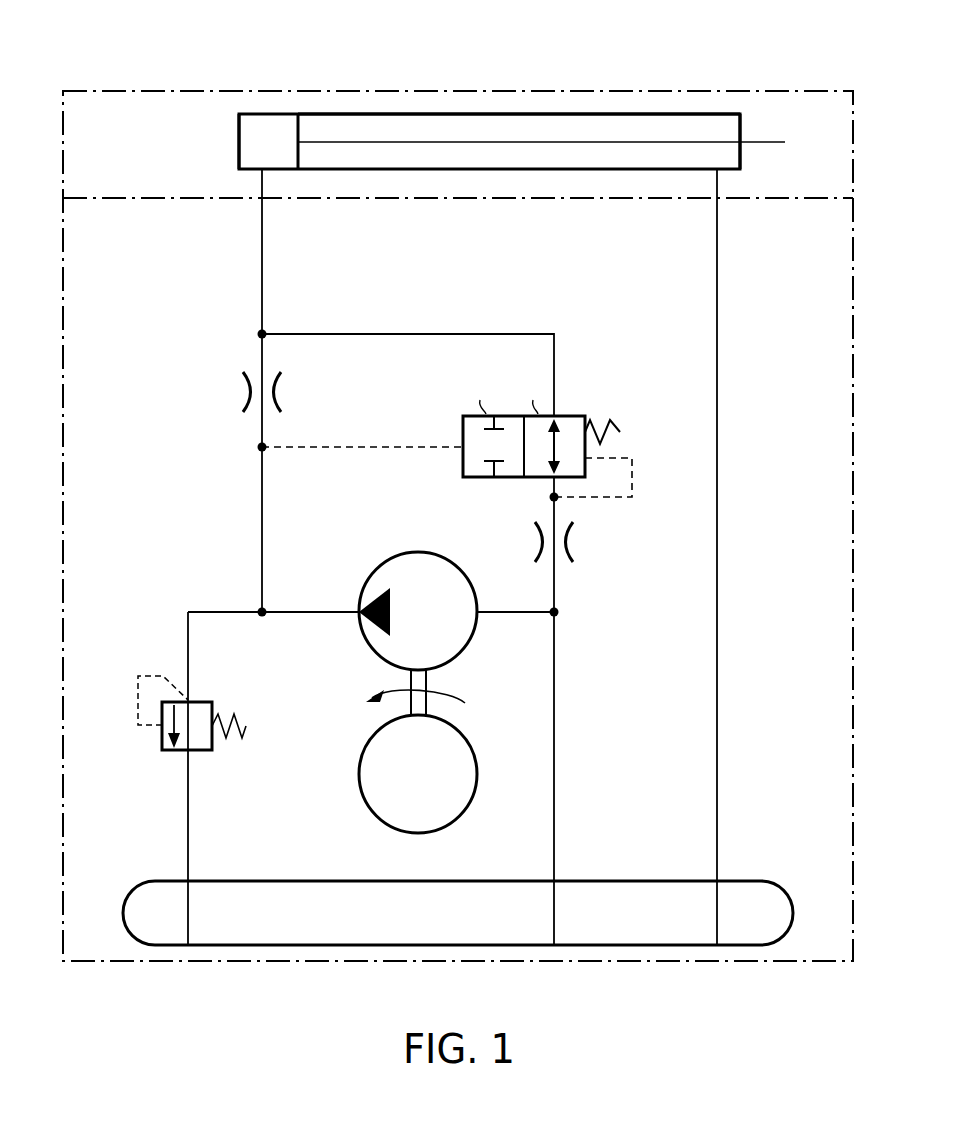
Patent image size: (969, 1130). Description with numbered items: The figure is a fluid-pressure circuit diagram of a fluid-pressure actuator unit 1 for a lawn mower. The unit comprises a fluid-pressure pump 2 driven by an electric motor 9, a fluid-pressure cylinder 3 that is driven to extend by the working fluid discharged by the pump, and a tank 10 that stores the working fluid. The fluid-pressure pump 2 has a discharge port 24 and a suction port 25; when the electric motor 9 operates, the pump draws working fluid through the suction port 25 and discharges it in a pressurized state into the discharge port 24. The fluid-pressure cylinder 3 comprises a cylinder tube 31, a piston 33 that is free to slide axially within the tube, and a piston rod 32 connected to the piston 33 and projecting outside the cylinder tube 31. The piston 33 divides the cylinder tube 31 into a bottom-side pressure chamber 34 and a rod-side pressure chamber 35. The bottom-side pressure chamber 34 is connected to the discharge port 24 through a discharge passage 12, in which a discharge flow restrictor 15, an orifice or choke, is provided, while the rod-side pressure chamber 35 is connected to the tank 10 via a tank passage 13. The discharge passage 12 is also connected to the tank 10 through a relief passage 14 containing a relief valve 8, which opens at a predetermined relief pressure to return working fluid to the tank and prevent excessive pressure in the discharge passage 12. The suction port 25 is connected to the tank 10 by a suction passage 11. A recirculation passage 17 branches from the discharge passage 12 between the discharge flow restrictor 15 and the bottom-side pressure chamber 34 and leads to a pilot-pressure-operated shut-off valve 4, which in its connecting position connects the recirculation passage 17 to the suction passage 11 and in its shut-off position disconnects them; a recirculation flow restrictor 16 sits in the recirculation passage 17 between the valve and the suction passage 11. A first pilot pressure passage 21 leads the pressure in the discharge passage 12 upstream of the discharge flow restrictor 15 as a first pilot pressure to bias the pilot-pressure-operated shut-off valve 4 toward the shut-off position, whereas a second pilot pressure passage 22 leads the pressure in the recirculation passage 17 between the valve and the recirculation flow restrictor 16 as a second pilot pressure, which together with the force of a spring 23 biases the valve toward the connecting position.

The fluid-pressure actuator unit 1 is at (765, 90).
The fluid-pressure pump 2 is at (360, 627).
The fluid-pressure cylinder 3 is at (253, 112).
The pilot-pressure-operated shut-off valve 4 is at (583, 416).
The relief valve 8 is at (172, 752).
The electric motor 9 is at (360, 784).
The tank 10 is at (750, 880).
The suction passage 11 is at (556, 735).
The discharge passage 12 is at (260, 281).
The tank passage 13 is at (719, 474).
The relief passage 14 is at (187, 841).
The discharge flow restrictor 15 is at (278, 385).
The recirculation flow restrictor 16 is at (571, 542).
The recirculation passage 17 is at (481, 332).
The first pilot pressure passage 21 is at (385, 446).
The second pilot pressure passage 22 is at (632, 497).
The spring 23 is at (620, 432).
The discharge port 24 is at (305, 610).
The suction port 25 is at (511, 610).
The cylinder tube 31 is at (424, 112).
The piston rod 32 is at (496, 140).
The piston 33 is at (299, 135).
The bottom-side pressure chamber 34 is at (275, 124).
The rod-side pressure chamber 35 is at (576, 122).